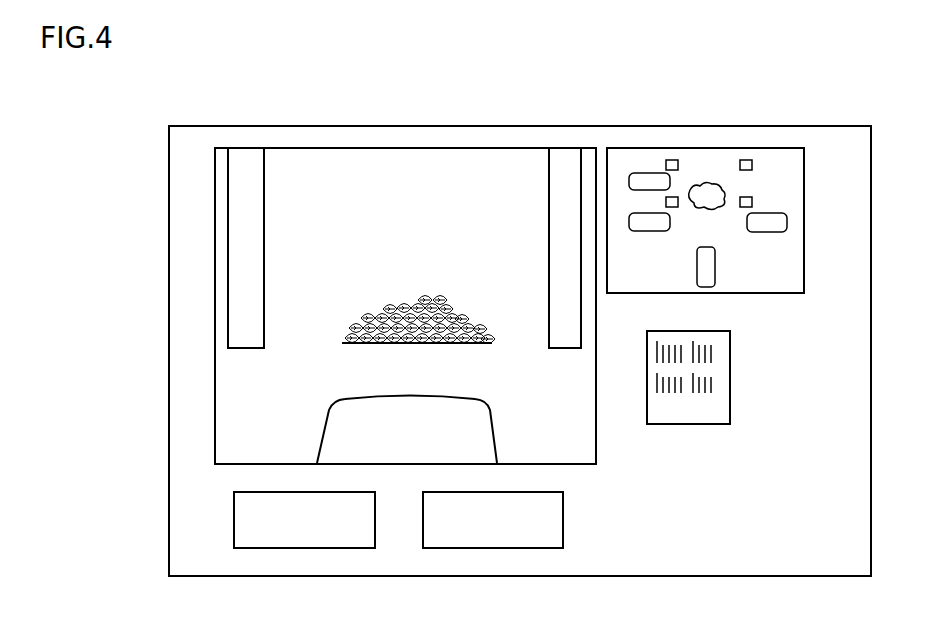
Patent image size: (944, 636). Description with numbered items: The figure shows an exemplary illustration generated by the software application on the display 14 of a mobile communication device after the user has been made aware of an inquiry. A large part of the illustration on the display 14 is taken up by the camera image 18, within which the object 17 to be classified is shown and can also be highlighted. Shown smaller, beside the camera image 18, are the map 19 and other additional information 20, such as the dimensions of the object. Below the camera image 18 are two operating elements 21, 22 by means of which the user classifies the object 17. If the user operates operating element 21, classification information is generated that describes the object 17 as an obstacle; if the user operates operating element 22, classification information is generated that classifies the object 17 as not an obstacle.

The display 14 is at (169, 220).
The object 17 is at (377, 290).
The camera image 18 is at (345, 147).
The map 19 is at (805, 254).
The additional information 20 is at (687, 424).
The operating element 21 is at (234, 515).
The operating element 22 is at (563, 520).